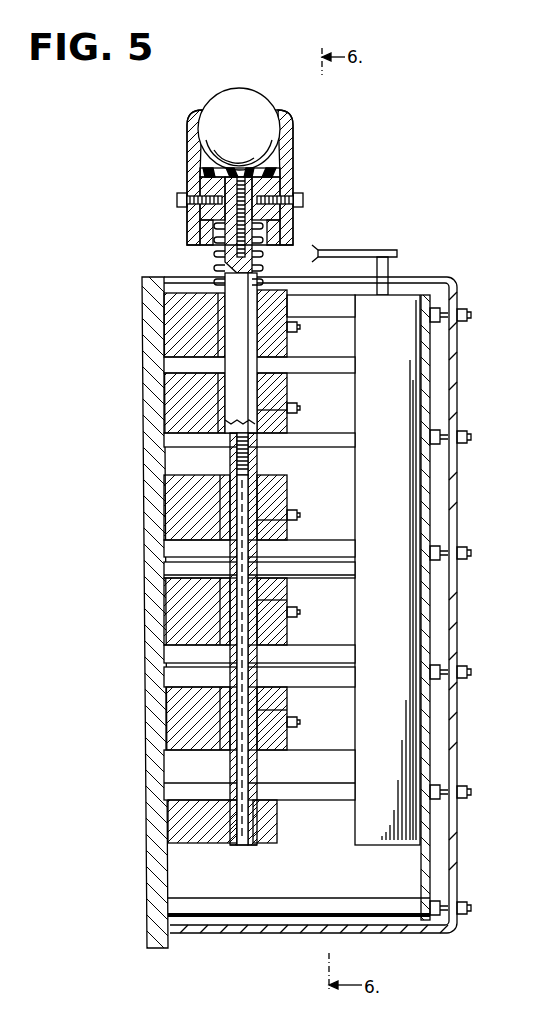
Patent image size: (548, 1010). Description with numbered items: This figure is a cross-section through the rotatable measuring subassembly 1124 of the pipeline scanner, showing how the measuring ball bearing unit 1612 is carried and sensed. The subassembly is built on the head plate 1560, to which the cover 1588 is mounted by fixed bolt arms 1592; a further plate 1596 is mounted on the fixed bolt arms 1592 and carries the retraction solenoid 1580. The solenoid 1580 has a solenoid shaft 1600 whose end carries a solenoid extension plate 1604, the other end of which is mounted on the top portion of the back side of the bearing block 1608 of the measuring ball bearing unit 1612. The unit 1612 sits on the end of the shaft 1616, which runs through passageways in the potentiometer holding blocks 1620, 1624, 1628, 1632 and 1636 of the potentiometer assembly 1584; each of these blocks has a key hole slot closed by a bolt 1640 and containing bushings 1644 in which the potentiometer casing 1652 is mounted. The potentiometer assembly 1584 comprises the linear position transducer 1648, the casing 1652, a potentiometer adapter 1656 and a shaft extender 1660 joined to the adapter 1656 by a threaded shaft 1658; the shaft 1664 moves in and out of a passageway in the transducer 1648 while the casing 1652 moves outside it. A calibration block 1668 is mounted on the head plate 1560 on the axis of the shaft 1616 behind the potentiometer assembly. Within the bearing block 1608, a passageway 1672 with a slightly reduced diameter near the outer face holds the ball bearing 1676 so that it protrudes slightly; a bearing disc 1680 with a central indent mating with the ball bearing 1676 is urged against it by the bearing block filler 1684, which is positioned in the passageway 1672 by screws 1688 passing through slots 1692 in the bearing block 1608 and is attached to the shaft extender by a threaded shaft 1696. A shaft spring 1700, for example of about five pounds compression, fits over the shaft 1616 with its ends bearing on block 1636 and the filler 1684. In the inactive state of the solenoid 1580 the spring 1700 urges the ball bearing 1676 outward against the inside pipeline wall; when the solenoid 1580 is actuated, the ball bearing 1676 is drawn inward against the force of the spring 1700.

The rotatable measuring subassembly 1124 is at (476, 524).
The head plate 1560 is at (153, 842).
The retraction solenoid 1580 is at (405, 745).
The potentiometer assembly 1584 is at (290, 573).
The cover 1588 is at (458, 640).
The fixed bolt arms 1592 is at (472, 437).
The plate 1596 is at (428, 847).
The solenoid shaft 1600 is at (390, 276).
The solenoid extension plate 1604 is at (373, 251).
The bearing block 1608 is at (291, 150).
The measuring ball bearing unit 1612 is at (303, 126).
The shaft 1616 is at (222, 268).
The potentiometer holding block 1620 is at (285, 697).
The potentiometer holding block 1624 is at (282, 593).
The potentiometer holding block 1628 is at (278, 493).
The potentiometer holding block 1632 is at (278, 420).
The potentiometer holding block 1636 is at (265, 348).
The bolt 1640 is at (297, 330).
The bushings 1644 is at (268, 385).
The linear position transducer 1648 is at (255, 845).
The potentiometer casing 1652 is at (263, 760).
The potentiometer adapter 1656 is at (272, 530).
The threaded shaft 1658 is at (232, 462).
The shaft extender 1660 is at (258, 452).
The shaft 1664 is at (240, 652).
The calibration block 1668 is at (205, 828).
The passageway 1672 is at (199, 140).
The ball bearing 1676 is at (218, 105).
The bearing disc 1680 is at (280, 172).
The bearing block filler 1684 is at (210, 185).
The screws 1688 is at (182, 195).
The slots 1692 is at (290, 214).
The threaded shaft 1696 is at (215, 210).
The shaft spring 1700 is at (220, 226).